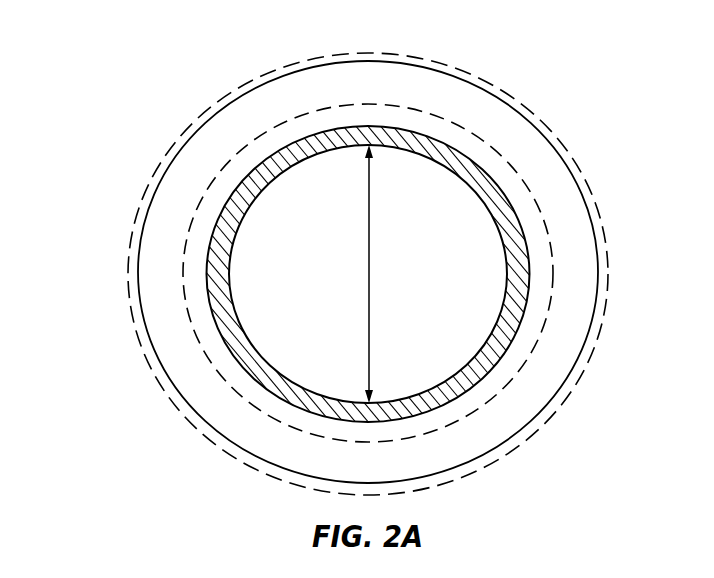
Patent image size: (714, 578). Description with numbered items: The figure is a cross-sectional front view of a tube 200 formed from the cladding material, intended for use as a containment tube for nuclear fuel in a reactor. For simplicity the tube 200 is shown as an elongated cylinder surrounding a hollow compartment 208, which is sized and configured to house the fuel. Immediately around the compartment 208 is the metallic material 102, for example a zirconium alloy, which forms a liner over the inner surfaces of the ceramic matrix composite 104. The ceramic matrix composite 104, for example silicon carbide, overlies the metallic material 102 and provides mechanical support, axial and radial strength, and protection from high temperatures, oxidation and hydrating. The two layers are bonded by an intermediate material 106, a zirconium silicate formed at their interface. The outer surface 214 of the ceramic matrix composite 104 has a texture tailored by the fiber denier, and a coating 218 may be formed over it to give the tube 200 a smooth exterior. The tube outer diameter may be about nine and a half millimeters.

The tube 200 is at (147, 146).
The coating 218 is at (412, 55).
The outer surface 214 is at (528, 115).
The ceramic matrix composite 104 is at (530, 158).
The intermediate material 106 is at (540, 242).
The metallic material 102 is at (512, 318).
The hollow compartment 208 is at (290, 310).